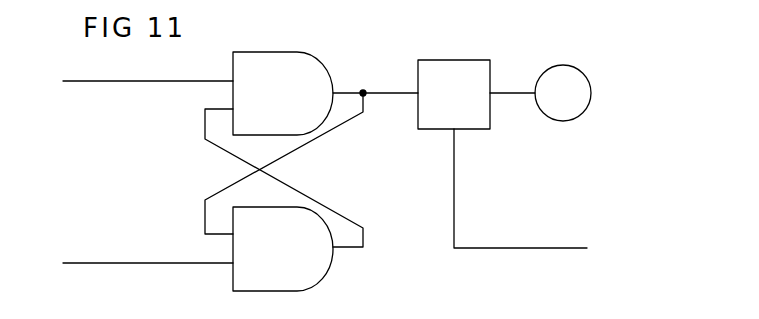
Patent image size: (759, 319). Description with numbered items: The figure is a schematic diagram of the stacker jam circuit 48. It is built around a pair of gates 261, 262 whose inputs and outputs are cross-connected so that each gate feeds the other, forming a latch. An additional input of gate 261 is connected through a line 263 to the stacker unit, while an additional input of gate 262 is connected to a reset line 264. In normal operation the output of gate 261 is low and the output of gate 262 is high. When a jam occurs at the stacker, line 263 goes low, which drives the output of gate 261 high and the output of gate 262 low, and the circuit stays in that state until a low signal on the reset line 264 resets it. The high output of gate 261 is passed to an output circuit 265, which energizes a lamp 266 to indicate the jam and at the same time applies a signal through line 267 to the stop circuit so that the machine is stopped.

The stacker jam circuit 48 is at (663, 76).
The gate 261 is at (310, 68).
The gate 262 is at (317, 258).
The line 263 is at (138, 81).
The reset line 264 is at (135, 262).
The output circuit 265 is at (455, 68).
The lamp 266 is at (563, 78).
The line 267 is at (550, 248).